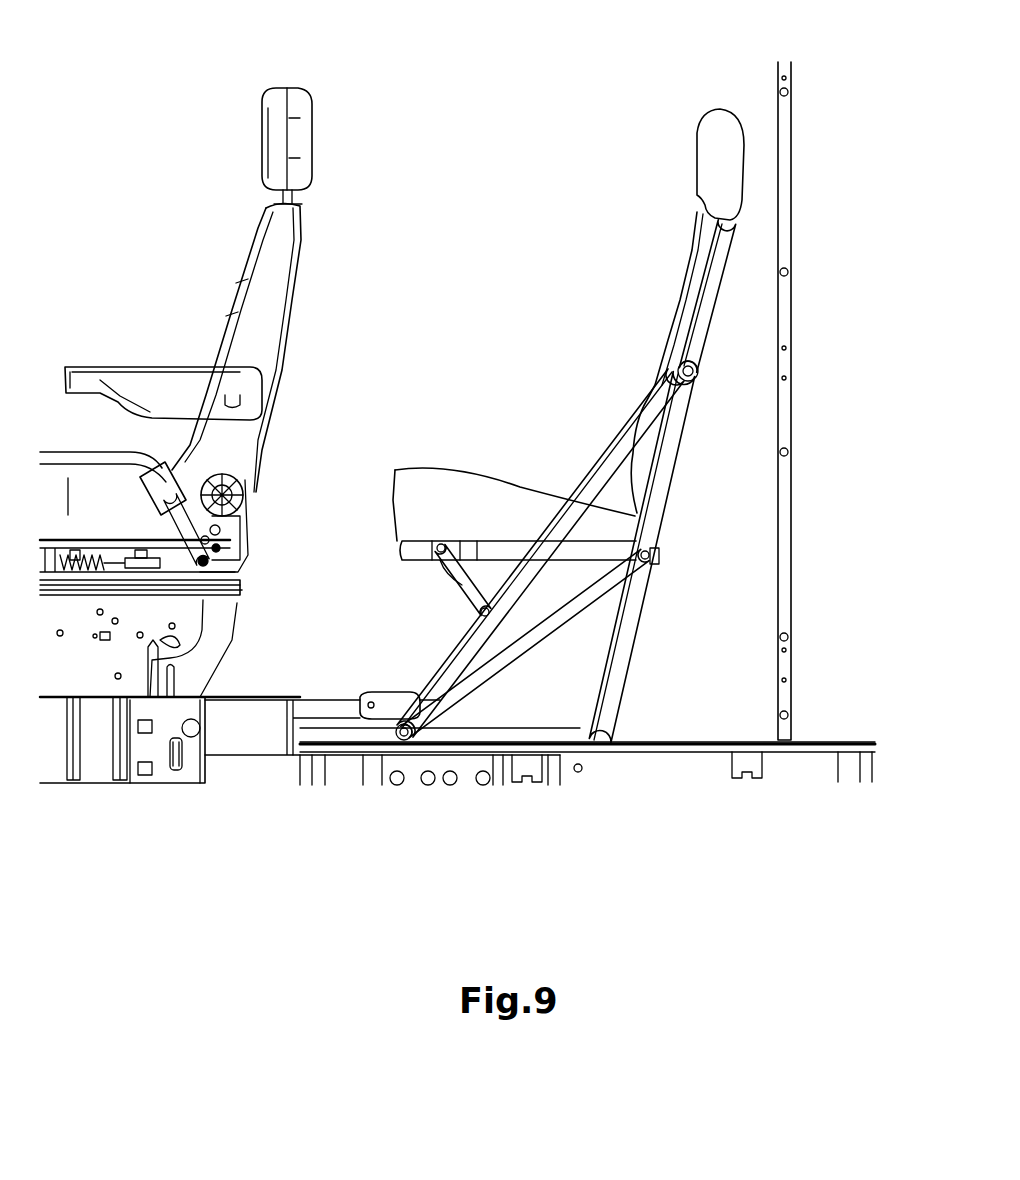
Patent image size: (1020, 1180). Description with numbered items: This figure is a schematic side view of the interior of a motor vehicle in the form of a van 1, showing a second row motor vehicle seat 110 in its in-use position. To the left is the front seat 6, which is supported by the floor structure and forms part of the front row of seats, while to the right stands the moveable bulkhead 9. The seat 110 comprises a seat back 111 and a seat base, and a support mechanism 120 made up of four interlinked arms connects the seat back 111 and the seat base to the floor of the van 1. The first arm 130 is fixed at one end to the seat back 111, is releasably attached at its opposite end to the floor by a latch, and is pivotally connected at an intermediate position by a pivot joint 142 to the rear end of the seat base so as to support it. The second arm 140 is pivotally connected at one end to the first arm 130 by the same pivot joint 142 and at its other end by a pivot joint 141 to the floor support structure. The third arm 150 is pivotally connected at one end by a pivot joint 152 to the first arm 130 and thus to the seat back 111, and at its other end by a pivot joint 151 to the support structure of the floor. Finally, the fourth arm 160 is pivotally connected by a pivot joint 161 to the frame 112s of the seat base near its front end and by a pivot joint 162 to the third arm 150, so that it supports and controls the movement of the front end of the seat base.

The van 1 is at (190, 816).
The front seat 6 is at (243, 252).
The moveable bulkhead 9 is at (777, 107).
The motor vehicle seat 110 is at (603, 168).
The seat back 111 is at (695, 167).
The frame of the seat base 112s is at (503, 540).
The support mechanism 120 is at (608, 450).
The first arm 130 is at (703, 270).
The second arm 140 is at (570, 617).
The pivot joint 141 is at (407, 738).
The pivot joint 142 is at (658, 558).
The third arm 150 is at (634, 409).
The pivot joint 151 is at (362, 701).
The pivot joint 152 is at (681, 364).
The fourth arm 160 is at (452, 577).
The pivot joint 161 is at (440, 542).
The pivot joint 162 is at (479, 613).